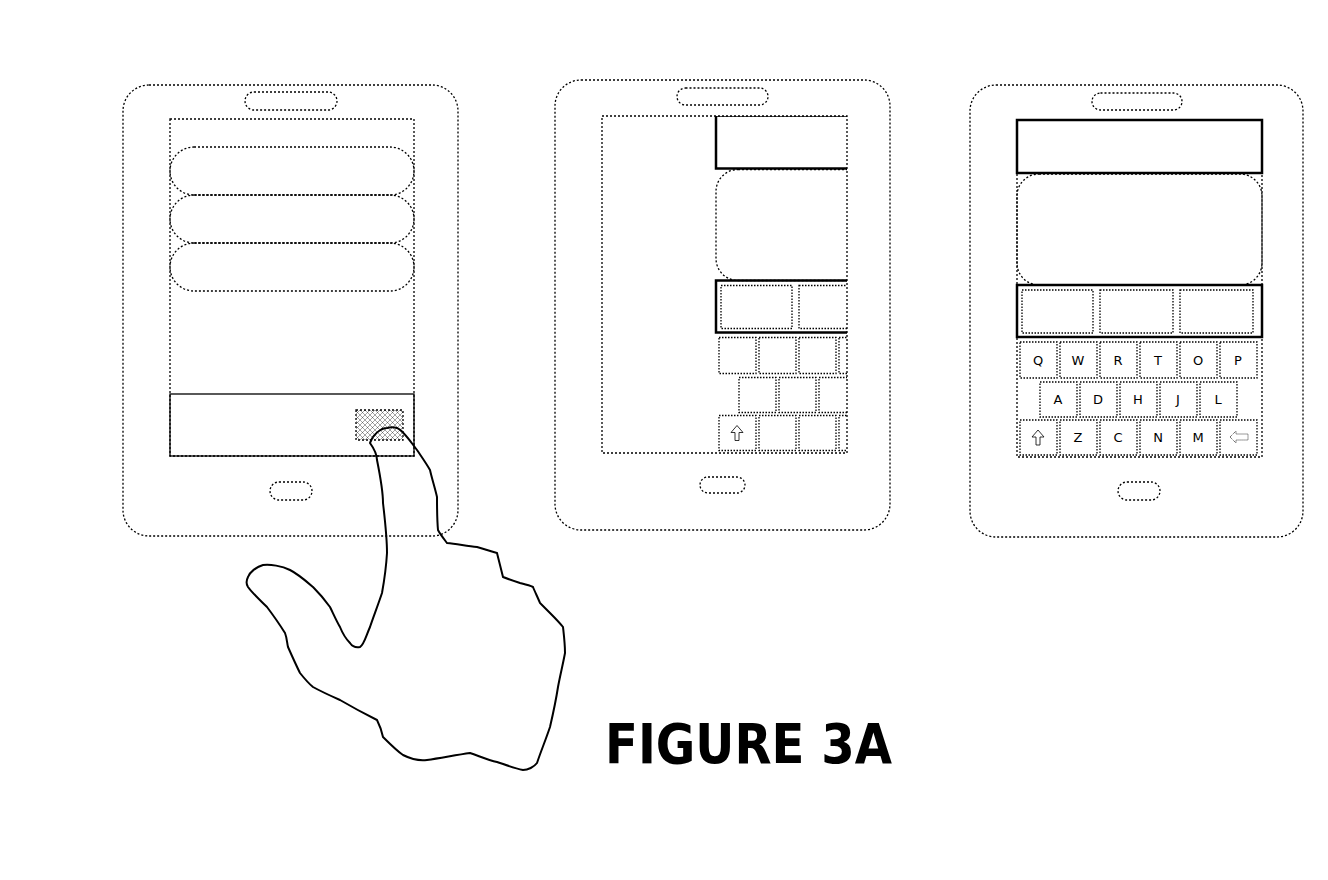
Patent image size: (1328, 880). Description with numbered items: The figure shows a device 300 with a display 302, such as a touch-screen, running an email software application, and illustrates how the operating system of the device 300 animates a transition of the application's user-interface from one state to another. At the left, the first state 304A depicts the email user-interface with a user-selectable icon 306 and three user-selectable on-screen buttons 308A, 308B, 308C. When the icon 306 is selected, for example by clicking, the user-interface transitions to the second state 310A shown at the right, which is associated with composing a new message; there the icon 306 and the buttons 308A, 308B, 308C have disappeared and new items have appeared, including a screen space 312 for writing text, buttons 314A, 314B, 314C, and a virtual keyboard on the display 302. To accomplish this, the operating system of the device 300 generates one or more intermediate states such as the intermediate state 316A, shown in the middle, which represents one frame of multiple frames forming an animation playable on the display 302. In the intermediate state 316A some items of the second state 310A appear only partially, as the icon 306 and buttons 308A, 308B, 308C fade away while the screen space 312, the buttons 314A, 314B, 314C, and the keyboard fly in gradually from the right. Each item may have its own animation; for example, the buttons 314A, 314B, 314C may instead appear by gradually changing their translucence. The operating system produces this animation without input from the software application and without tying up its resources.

The device 300 is at (458, 142).
The display 302 is at (229, 457).
The first state 304A is at (292, 249).
The user-selectable icon 306 is at (357, 415).
The user-selectable on-screen button 308A is at (292, 171).
The user-selectable on-screen button 308B is at (292, 219).
The user-selectable on-screen button 308C is at (292, 267).
The second state 310A is at (1136, 289).
The screen space 312 is at (1237, 206).
The button 314A is at (1058, 288).
The button 314B is at (1138, 288).
The button 314C is at (1218, 288).
The intermediate state 316A is at (758, 286).